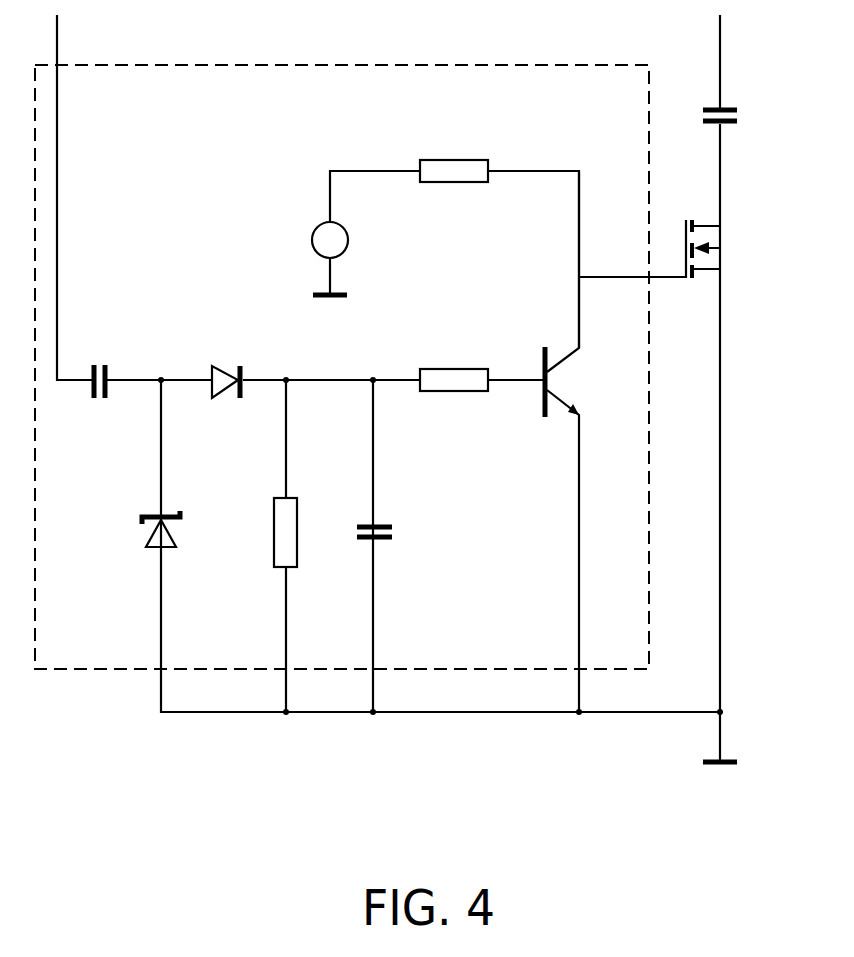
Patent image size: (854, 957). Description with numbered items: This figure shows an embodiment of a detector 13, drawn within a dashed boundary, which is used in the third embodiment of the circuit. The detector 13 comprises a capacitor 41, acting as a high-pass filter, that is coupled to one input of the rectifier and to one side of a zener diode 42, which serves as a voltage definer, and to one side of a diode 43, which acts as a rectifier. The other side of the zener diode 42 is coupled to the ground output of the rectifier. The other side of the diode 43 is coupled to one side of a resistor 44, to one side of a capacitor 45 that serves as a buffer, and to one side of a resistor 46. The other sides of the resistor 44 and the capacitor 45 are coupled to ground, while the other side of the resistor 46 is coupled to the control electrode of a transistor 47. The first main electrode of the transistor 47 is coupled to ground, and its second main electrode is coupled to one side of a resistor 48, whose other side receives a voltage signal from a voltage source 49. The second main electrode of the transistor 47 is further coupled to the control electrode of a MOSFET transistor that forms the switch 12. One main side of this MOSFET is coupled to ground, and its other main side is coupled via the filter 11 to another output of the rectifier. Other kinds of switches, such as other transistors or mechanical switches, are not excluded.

The filter 11 is at (736, 113).
The switch 12 is at (716, 239).
The detector 13 is at (78, 672).
The capacitor 41 is at (101, 365).
The zener diode 42 is at (148, 529).
The diode 43 is at (224, 366).
The resistor 44 is at (274, 532).
The capacitor 45 is at (392, 531).
The resistor 46 is at (457, 369).
The transistor 47 is at (552, 382).
The resistor 48 is at (458, 160).
The voltage source 49 is at (349, 240).